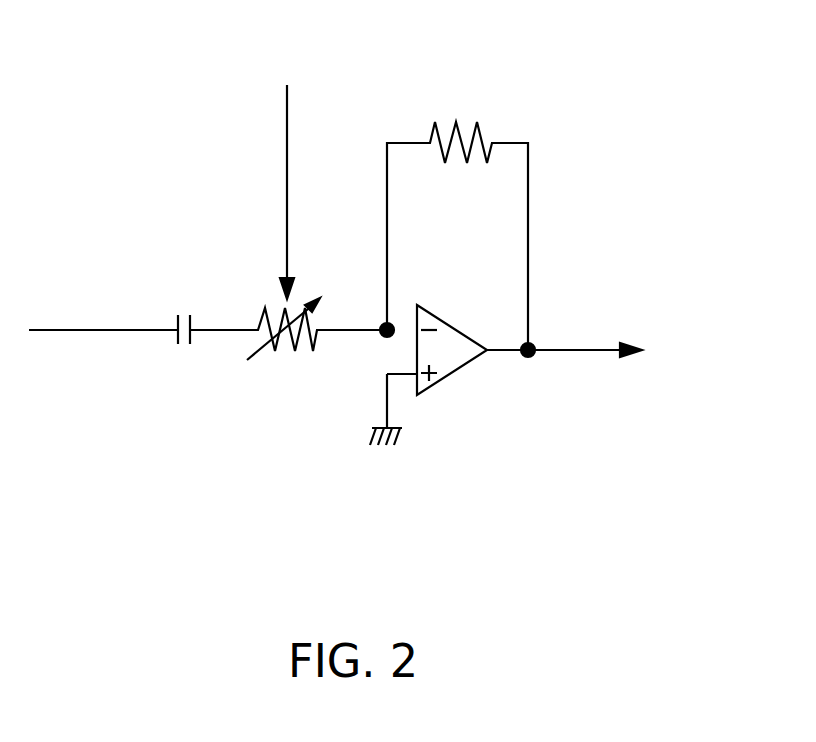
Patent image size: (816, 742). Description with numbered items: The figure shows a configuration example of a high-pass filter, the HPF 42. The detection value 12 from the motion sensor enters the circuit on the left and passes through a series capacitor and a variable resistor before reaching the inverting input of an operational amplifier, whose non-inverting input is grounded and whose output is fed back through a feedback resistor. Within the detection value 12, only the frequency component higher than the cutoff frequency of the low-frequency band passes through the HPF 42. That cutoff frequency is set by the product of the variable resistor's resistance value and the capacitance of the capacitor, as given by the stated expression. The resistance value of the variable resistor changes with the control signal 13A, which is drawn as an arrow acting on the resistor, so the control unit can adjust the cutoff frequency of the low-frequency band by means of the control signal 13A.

The high-pass filter 42 is at (702, 53).
The detection value 12 is at (62, 330).
The control signal 13A is at (287, 197).